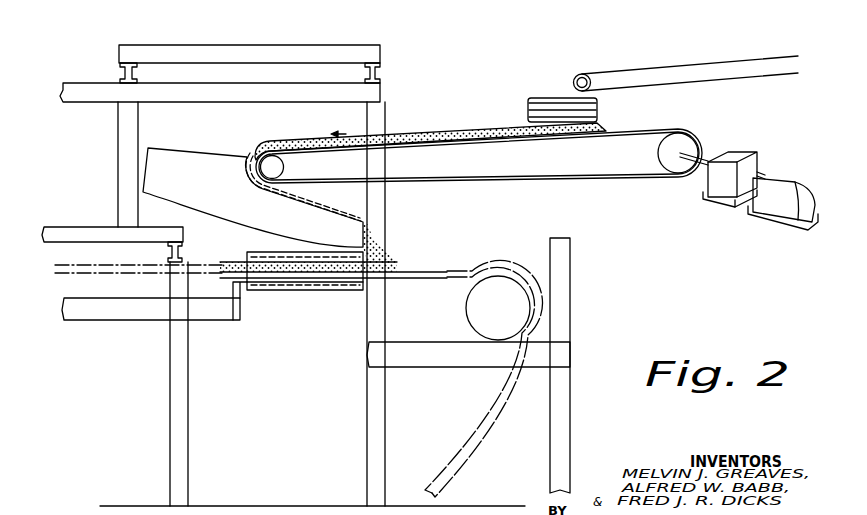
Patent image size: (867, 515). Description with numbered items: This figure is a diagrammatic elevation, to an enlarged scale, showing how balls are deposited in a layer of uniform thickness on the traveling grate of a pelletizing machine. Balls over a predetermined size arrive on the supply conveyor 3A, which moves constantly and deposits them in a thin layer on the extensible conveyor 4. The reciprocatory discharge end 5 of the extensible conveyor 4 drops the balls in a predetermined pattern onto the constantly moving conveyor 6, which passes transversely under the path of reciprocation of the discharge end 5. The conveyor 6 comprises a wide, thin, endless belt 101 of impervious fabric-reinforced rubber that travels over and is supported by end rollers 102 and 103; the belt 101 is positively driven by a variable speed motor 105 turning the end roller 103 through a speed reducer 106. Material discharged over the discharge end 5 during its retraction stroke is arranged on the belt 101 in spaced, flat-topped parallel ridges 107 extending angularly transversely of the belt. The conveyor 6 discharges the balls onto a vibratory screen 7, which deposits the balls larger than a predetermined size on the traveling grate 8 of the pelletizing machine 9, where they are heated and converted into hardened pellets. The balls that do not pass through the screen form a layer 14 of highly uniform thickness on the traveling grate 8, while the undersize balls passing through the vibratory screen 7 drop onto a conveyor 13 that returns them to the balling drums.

The supply conveyor 3A is at (673, 64).
The extensible conveyor 4 is at (540, 98).
The reciprocatory discharge end 5 is at (528, 110).
The conveyor 6 is at (459, 144).
The vibratory screen 7 is at (238, 155).
The traveling grate 8 is at (418, 267).
The pelletizing machine 9 is at (168, 365).
The conveyor 13 is at (300, 291).
The layer 14 is at (387, 262).
The endless belt 101 is at (505, 180).
The end roller 102 is at (284, 169).
The end roller 103 is at (660, 153).
The variable speed motor 105 is at (787, 180).
The speed reducer 106 is at (729, 158).
The ridges 107 is at (487, 132).